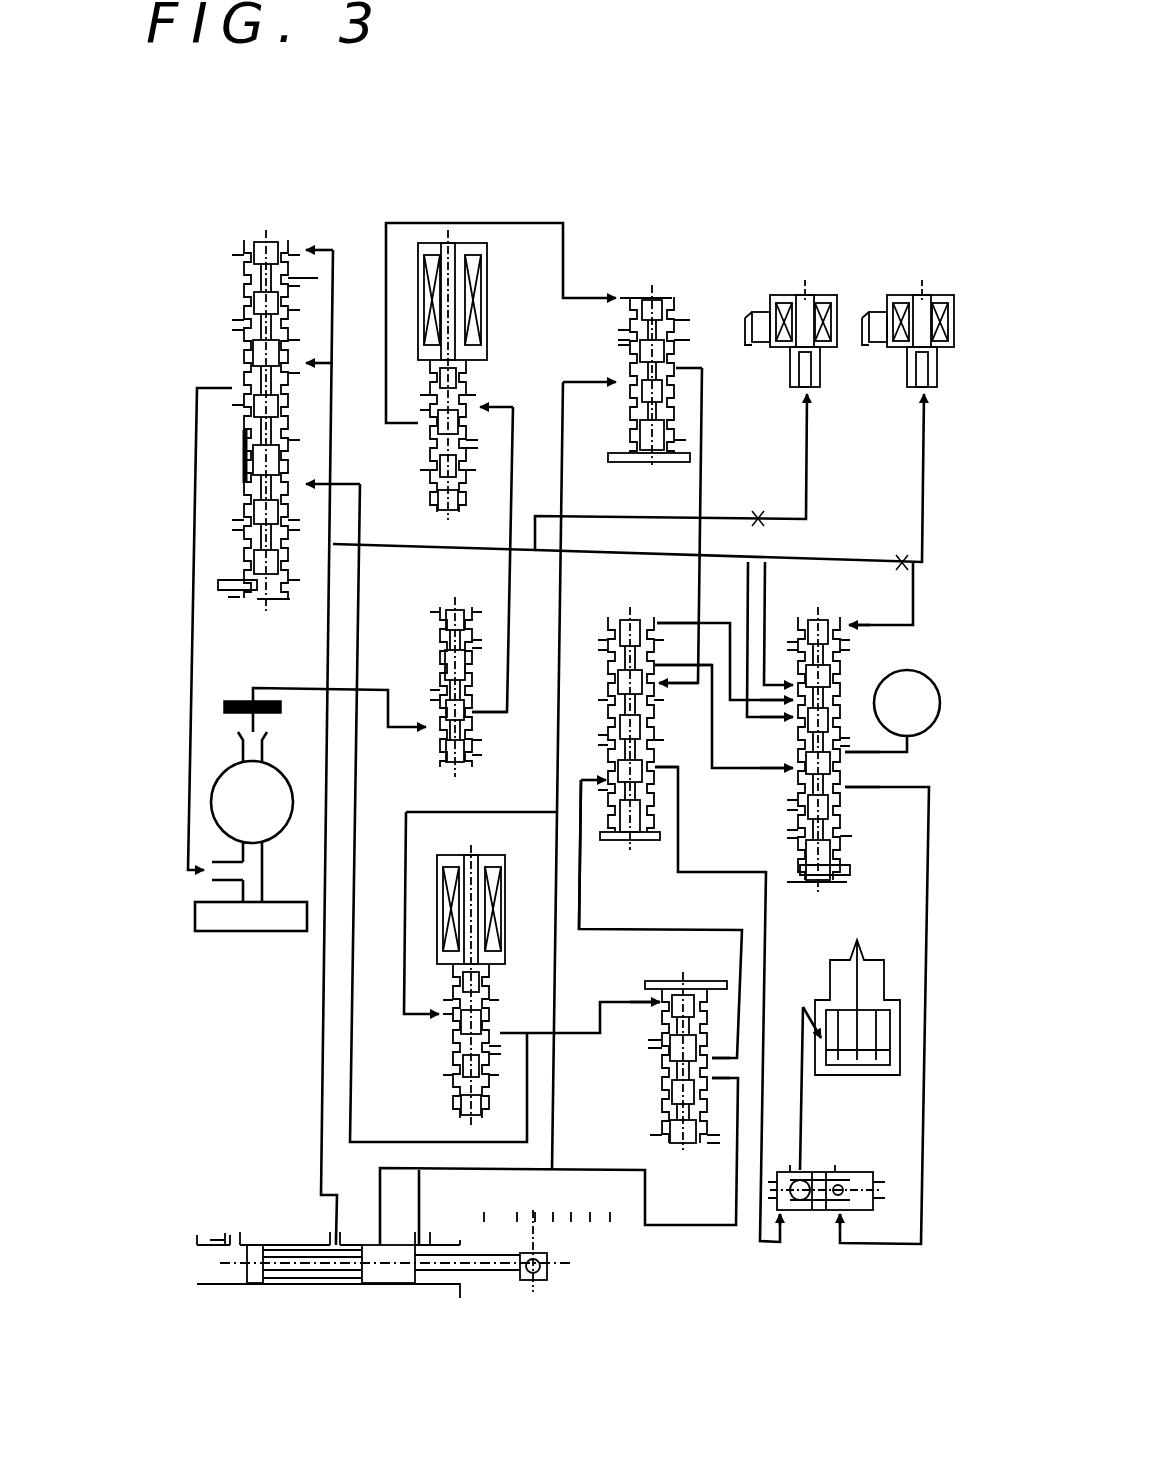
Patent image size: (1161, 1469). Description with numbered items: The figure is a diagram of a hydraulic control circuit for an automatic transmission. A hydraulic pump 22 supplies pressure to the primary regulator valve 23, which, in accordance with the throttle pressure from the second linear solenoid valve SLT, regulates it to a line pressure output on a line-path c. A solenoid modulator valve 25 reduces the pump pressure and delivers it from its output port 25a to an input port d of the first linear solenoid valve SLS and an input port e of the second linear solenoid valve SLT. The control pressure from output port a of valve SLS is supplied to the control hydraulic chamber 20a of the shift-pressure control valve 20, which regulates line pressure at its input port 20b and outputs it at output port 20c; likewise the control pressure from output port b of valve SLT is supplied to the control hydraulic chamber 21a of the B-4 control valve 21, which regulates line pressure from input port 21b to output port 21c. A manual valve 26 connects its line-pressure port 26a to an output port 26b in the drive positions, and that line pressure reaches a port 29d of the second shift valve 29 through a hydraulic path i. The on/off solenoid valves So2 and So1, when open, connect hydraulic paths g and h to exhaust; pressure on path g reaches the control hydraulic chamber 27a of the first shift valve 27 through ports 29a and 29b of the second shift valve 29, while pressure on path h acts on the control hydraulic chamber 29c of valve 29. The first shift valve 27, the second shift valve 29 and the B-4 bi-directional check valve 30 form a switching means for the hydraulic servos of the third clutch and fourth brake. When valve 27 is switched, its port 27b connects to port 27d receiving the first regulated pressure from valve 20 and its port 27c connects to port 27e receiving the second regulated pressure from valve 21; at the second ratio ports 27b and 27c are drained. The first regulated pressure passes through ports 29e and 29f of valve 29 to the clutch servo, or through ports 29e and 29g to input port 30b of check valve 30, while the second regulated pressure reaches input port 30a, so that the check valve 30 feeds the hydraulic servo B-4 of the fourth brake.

The shift-pressure control valve 20 is at (690, 272).
The control hydraulic chamber 20a is at (630, 297).
The input port 20b is at (612, 380).
The output port 20c is at (680, 368).
The B-4 control valve 21 is at (641, 976).
The control hydraulic chamber 21a is at (655, 1006).
The input port 21b is at (712, 1080).
The output port 21c is at (710, 1055).
The hydraulic pump 22 is at (222, 783).
The primary regulator valve 23 is at (213, 316).
The solenoid modulator valve 25 is at (424, 656).
The output port 25a is at (490, 712).
The manual valve 26 is at (291, 1220).
The line-pressure port 26a is at (333, 1237).
The output port 26b is at (380, 1237).
The first (U1) shift valve 27 is at (611, 622).
The control hydraulic chamber 27a is at (653, 620).
The port 27b is at (680, 662).
The port 27c is at (668, 768).
The port 27d is at (662, 690).
The port 27e is at (598, 782).
The second (U2) shift valve 29 is at (850, 612).
The port 29a is at (853, 695).
The port 29b is at (776, 722).
The control hydraulic chamber 29c is at (838, 618).
The port 29d is at (795, 735).
The port 29e is at (790, 772).
The port 29f is at (850, 762).
The port 29g is at (848, 790).
The B-4 bi-directional check valve 30 is at (836, 1162).
The input port 30a is at (781, 1216).
The input port 30b is at (839, 1216).
The first linear solenoid valve SLS is at (462, 303).
The second linear solenoid valve SLT is at (506, 882).
The solenoid valve So1 is at (944, 280).
The solenoid valve So2 is at (830, 280).
The hydraulic servo B-4 is at (886, 949).
The output port a is at (416, 423).
The output port b is at (500, 1032).
The line-path c is at (322, 996).
The input port d is at (485, 403).
The input port e is at (415, 1017).
The hydraulic path g is at (806, 452).
The hydraulic path h is at (923, 444).
The hydraulic path i is at (614, 562).